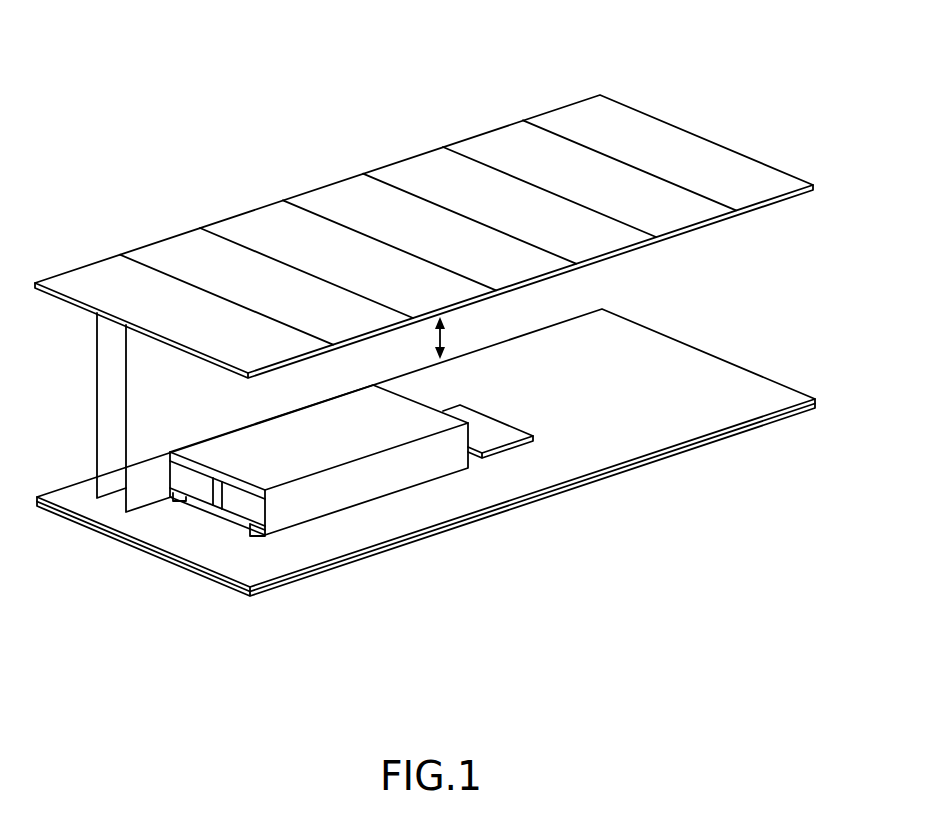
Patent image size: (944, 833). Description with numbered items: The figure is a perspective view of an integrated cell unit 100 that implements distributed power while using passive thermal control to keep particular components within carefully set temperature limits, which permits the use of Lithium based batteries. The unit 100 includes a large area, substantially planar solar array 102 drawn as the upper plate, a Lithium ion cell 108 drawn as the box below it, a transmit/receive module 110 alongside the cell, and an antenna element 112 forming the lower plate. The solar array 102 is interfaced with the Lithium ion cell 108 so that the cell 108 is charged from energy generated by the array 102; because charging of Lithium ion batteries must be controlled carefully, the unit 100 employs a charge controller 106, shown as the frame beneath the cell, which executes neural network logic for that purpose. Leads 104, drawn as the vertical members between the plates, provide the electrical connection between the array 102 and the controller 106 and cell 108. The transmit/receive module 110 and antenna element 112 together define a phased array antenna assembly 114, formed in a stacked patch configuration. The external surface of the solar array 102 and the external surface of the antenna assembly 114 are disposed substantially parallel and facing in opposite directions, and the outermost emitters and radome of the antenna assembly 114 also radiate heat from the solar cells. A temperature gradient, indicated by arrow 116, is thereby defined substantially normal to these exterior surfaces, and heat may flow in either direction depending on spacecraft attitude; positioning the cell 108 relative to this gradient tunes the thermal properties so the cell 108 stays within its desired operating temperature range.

The integrated cell unit 100 is at (800, 125).
The solar array 102 is at (172, 236).
The leads 104 is at (96, 393).
The charge controller 106 is at (184, 474).
The Lithium ion cell 108 is at (372, 482).
The transmit/receive module 110 is at (500, 439).
The antenna element 112 is at (698, 452).
The antenna assembly 114 is at (827, 290).
The arrow 116 is at (447, 339).